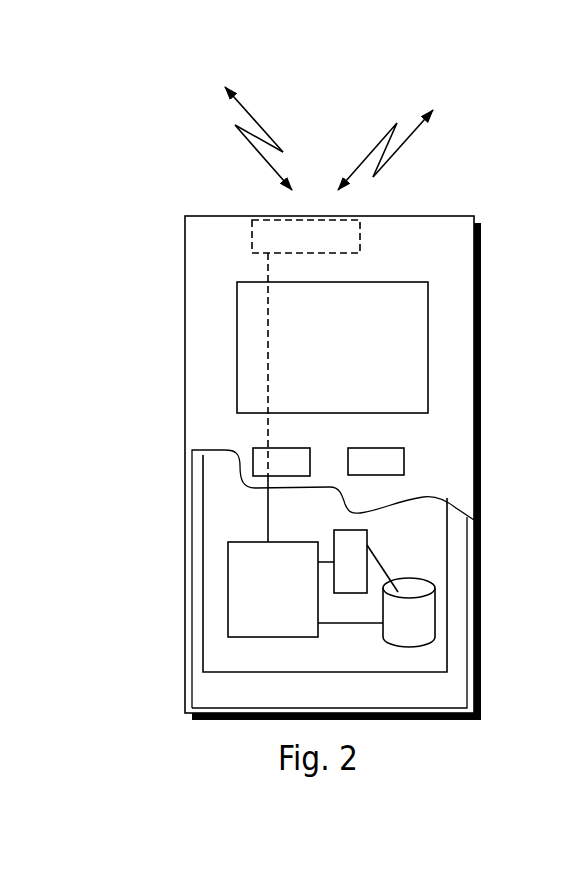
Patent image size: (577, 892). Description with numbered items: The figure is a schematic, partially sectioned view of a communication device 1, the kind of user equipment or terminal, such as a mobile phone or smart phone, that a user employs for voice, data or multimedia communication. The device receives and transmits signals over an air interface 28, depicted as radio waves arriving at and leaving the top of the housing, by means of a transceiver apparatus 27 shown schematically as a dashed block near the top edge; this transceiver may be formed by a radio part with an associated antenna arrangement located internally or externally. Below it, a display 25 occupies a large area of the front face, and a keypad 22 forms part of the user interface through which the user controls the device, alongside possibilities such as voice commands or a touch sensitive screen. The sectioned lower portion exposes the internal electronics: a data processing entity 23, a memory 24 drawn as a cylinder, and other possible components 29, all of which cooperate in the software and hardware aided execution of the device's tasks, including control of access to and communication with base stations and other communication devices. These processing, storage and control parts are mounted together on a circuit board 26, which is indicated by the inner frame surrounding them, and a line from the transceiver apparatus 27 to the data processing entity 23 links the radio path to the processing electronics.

The communication device 1 is at (185, 258).
The keypad 22 is at (255, 462).
The data processing entity 23 is at (235, 572).
The memory 24 is at (402, 627).
The display 25 is at (250, 335).
The circuit board 26 is at (227, 657).
The transceiver apparatus 27 is at (252, 238).
The air interface 28 is at (329, 138).
The other possible components 29 is at (350, 547).